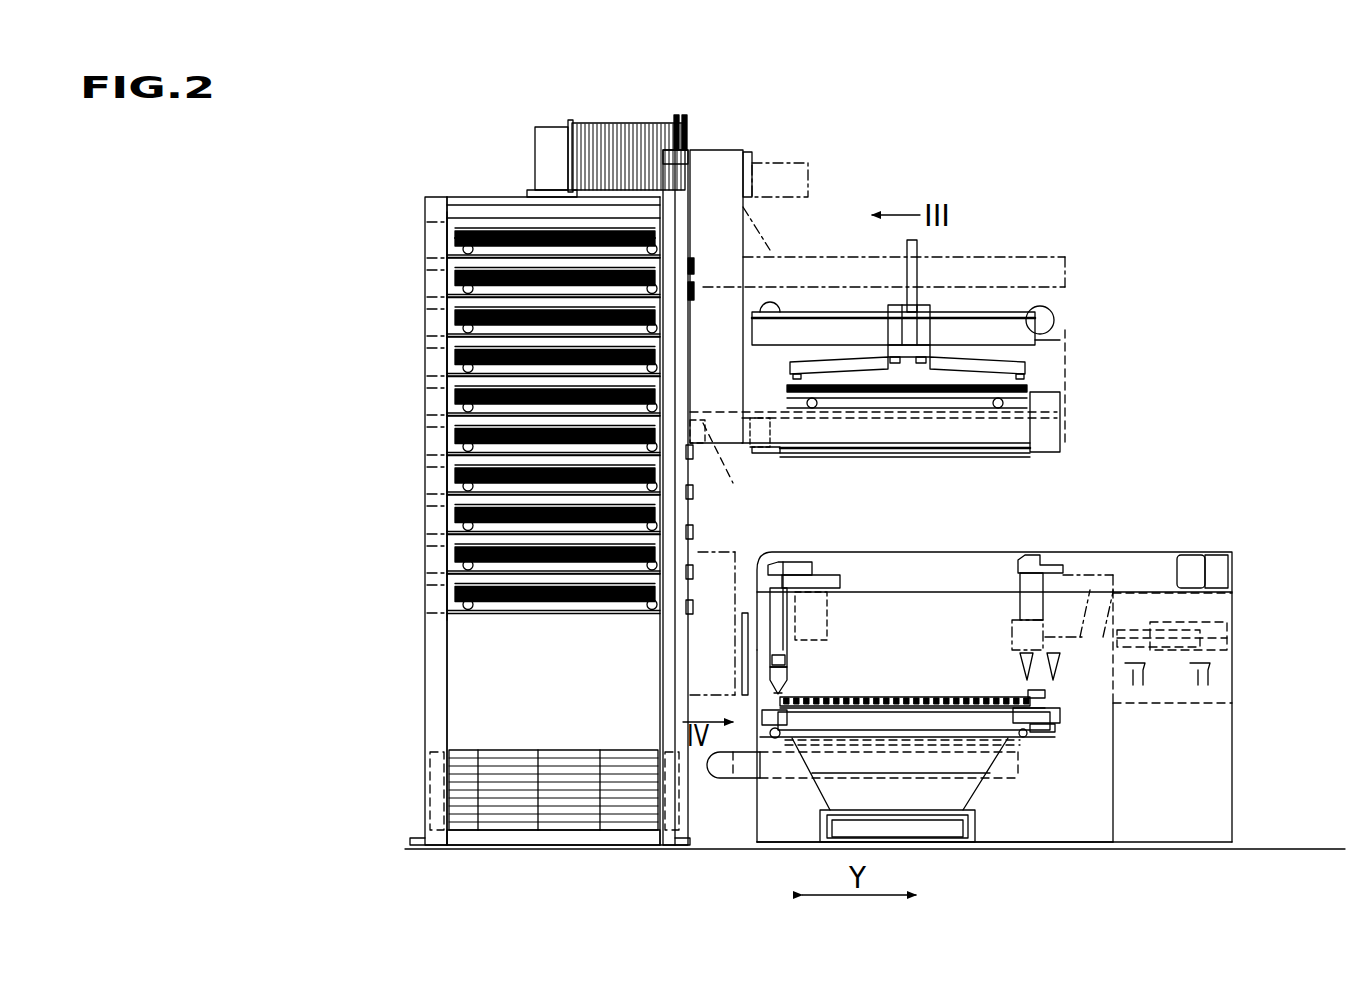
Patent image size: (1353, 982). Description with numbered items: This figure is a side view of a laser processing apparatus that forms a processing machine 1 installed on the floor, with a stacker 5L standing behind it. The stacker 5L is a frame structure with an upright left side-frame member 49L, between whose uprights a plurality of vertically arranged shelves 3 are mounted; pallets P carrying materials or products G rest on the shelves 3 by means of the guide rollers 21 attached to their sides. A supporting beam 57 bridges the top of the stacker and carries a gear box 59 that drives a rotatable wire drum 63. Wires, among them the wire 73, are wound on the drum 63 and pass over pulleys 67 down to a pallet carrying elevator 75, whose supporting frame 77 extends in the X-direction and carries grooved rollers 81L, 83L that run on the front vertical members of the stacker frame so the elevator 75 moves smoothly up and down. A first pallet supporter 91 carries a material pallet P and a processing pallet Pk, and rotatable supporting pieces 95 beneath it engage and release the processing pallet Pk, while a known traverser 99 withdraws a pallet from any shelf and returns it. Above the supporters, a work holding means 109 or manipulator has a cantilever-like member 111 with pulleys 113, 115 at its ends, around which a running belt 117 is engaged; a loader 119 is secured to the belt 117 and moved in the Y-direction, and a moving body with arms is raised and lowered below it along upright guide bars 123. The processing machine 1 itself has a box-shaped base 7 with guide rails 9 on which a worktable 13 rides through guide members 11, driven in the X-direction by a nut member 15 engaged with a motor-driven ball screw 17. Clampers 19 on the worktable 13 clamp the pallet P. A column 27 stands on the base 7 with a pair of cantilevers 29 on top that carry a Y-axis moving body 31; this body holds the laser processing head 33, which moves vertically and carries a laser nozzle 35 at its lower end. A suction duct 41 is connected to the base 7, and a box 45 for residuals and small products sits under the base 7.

The processing machine 1 is at (1258, 522).
The shelves 3 is at (420, 345).
The second stacker 5L is at (416, 209).
The base 7 is at (777, 832).
The guide rails 9 is at (776, 726).
The guide members 11 is at (772, 708).
The worktable 13 is at (975, 722).
The nut member 15 is at (1032, 737).
The ball screw 17 is at (1020, 742).
The clampers 19 is at (1043, 697).
The guide rollers 21 is at (445, 290).
The column 27 is at (1233, 735).
The cantilevers 29 is at (890, 562).
The Y-axis moving body 31 is at (828, 615).
The laser processing head 33 is at (790, 660).
The laser nozzle 35 is at (786, 679).
The suction duct 41 is at (708, 780).
The box 45 is at (947, 843).
The left side-frame member 49L is at (447, 318).
The supporting beam 57 is at (513, 200).
The gear box 59 is at (536, 129).
The wire drum 63 is at (627, 124).
The pulleys 67 is at (684, 126).
The wire 73 is at (693, 163).
The pallet carrying elevator 75 is at (980, 296).
The supporting frame 77 is at (732, 369).
The grooved roller 81L is at (697, 282).
The grooved roller 83L is at (727, 518).
The first pallet supporter 91 is at (793, 257).
The supporting pieces 95 is at (1062, 458).
The traverser 99 is at (1058, 390).
The work holding means 109 is at (1078, 322).
The cantilever-like member 111 is at (808, 170).
The pulley 113 is at (770, 305).
The pulley 115 is at (1046, 310).
The running belt 117 is at (1002, 311).
The loader 119 is at (924, 327).
The guide bars 123 is at (918, 252).
The pallet P is at (510, 252).
The processing pallet Pk is at (993, 457).
The products G is at (455, 238).